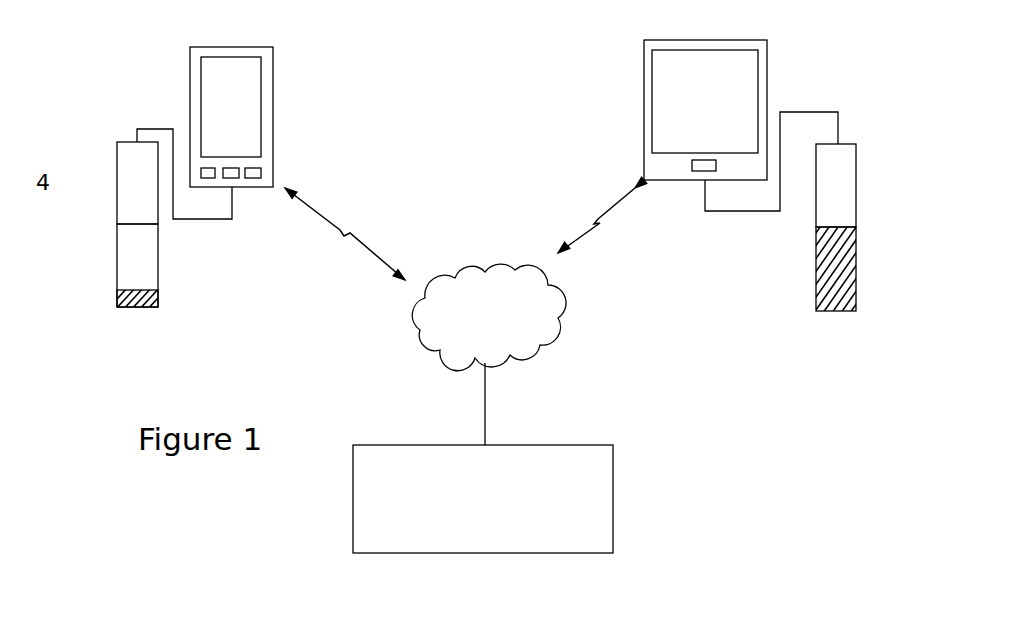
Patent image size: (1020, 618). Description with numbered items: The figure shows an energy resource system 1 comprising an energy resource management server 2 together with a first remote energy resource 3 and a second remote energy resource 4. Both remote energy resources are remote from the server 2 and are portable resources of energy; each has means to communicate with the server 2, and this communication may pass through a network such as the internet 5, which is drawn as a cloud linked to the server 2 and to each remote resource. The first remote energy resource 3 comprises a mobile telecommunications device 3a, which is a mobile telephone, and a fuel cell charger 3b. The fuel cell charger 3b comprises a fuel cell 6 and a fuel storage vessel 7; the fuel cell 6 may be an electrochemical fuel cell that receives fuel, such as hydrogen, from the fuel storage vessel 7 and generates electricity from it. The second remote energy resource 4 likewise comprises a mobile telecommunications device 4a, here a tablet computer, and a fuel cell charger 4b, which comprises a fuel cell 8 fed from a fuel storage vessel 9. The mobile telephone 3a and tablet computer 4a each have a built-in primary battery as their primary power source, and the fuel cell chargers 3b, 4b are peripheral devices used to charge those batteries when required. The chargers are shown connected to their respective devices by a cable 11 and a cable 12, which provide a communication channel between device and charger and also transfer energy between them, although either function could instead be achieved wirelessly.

The energy resource system 1 is at (80, 40).
The energy resource management server 2 is at (482, 515).
The first remote energy resource 3 is at (148, 36).
The mobile telecommunications device 3a is at (270, 90).
The fuel cell charger 3b is at (82, 215).
The second remote energy resource 4 is at (820, 46).
The mobile telecommunications device 4a is at (674, 110).
The fuel cell charger 4b is at (800, 250).
The internet 5 is at (488, 328).
The fuel cell 6 is at (124, 180).
The fuel storage vessel 7 is at (124, 262).
The fuel cell 8 is at (848, 178).
The fuel storage vessel 9 is at (862, 255).
The cable 11 is at (204, 222).
The cable 12 is at (710, 218).